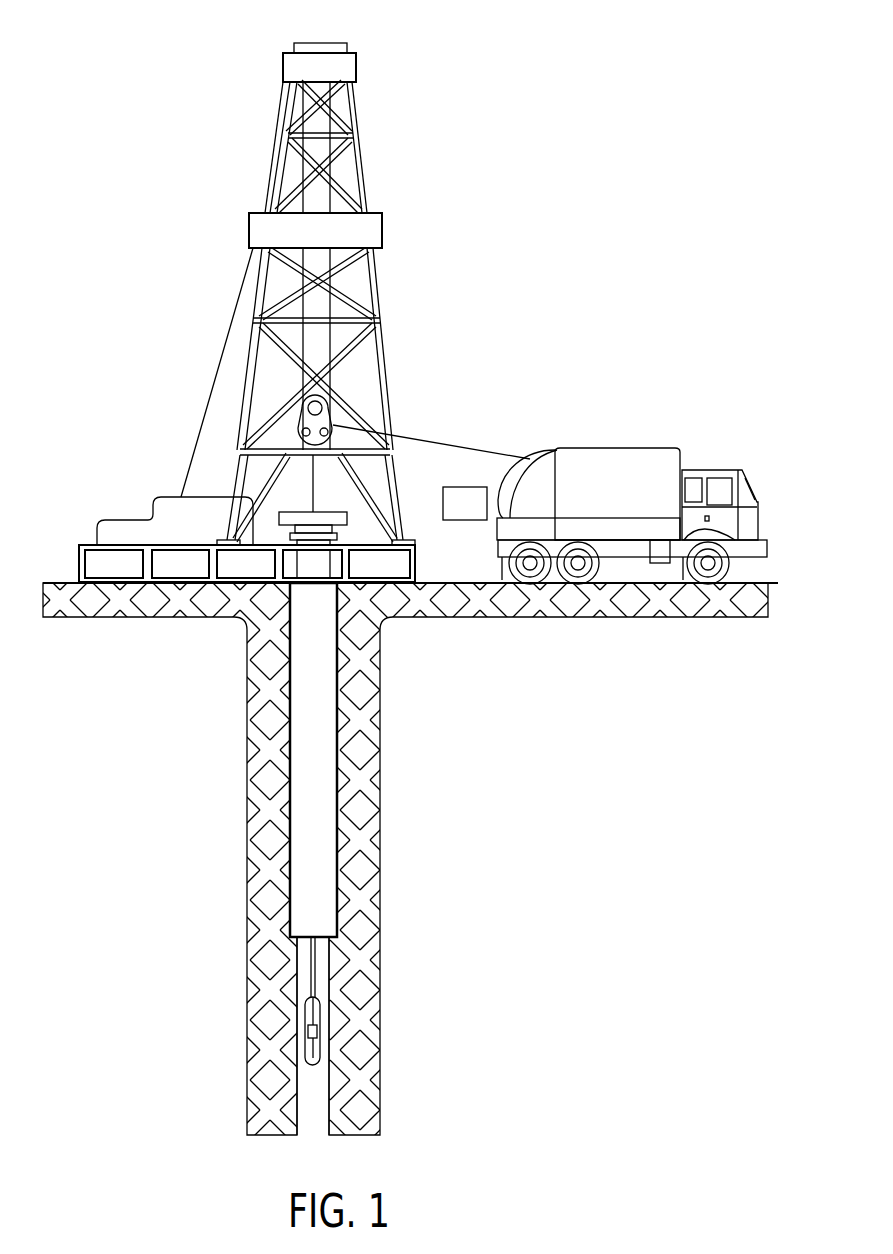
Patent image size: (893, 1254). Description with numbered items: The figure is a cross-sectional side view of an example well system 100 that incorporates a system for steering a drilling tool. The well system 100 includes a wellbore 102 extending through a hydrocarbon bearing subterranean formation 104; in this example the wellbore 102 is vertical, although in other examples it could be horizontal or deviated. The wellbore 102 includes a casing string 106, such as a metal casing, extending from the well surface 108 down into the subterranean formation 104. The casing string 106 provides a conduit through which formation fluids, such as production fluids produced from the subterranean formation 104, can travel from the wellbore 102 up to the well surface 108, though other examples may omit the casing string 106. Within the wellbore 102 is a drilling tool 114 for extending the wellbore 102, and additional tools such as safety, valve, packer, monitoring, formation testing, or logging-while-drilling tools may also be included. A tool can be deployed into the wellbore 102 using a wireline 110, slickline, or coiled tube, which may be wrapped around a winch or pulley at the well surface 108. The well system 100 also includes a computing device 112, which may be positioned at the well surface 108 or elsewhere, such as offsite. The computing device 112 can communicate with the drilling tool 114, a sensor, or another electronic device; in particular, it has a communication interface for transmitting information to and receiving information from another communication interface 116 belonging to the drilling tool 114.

The well system 100 is at (486, 308).
The wellbore 102 is at (338, 833).
The subterranean formation 104 is at (398, 723).
The casing string 106 is at (298, 853).
The well surface 108 is at (348, 513).
The wireline 110 is at (430, 441).
The computing device 112 is at (473, 450).
The drilling tool 114 is at (326, 998).
The communication interface 116 is at (323, 403).